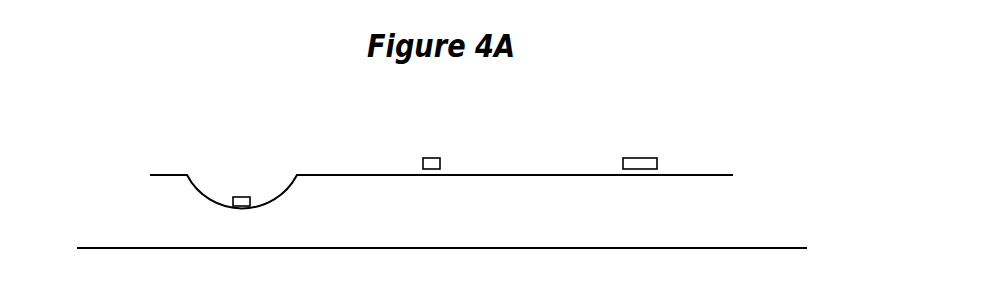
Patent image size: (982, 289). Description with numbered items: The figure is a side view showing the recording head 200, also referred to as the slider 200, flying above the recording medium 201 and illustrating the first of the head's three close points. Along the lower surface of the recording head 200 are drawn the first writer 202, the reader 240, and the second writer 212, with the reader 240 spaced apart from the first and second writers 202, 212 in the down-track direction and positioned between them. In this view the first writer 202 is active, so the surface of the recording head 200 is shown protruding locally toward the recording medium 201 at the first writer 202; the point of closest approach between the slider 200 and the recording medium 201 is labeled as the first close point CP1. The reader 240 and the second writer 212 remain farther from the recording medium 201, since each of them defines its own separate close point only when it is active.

The recording head 200 is at (173, 175).
The recording medium 201 is at (107, 247).
The first writer 202 is at (243, 197).
The first close point CP1 is at (245, 209).
The reader 240 is at (432, 158).
The second writer 212 is at (639, 158).